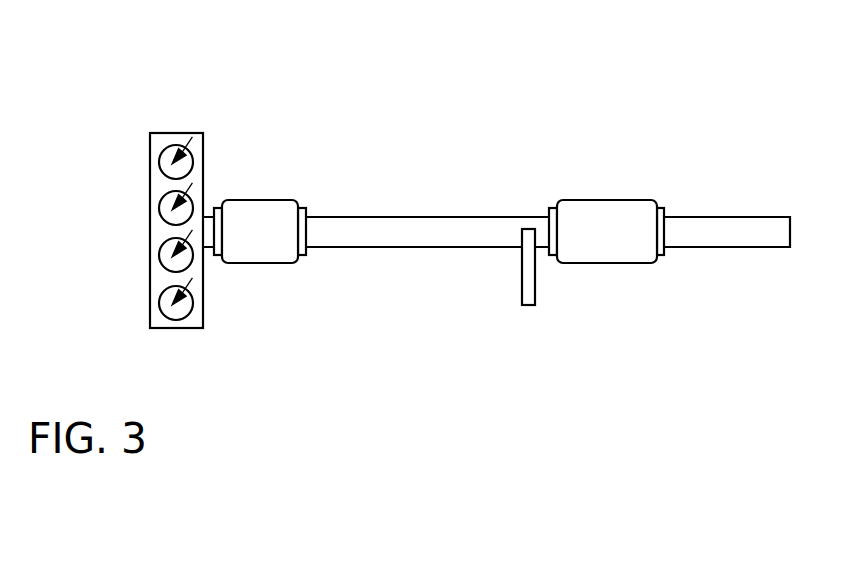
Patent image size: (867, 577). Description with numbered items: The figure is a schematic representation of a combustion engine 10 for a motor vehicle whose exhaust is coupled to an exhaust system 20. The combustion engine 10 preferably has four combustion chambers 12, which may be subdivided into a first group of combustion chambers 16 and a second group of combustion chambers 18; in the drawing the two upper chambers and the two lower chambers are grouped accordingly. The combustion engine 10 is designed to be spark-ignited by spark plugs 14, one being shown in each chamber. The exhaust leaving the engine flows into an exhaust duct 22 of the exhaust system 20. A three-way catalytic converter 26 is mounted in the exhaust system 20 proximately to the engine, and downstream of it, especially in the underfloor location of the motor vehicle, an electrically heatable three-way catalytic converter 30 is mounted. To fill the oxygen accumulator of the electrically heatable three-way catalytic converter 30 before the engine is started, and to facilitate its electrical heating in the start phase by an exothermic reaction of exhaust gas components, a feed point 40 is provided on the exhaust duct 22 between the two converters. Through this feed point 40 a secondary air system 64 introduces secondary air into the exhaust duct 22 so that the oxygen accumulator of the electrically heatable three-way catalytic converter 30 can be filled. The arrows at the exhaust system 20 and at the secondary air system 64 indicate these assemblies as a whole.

The combustion engine 10 is at (178, 88).
The combustion chambers 12 is at (192, 155).
The spark plugs 14 is at (193, 285).
The first group of combustion chambers 16 is at (165, 207).
The second group of combustion chambers 18 is at (165, 303).
The exhaust system 20 is at (482, 163).
The exhaust duct 22 is at (402, 224).
The three-way catalytic converter 26 is at (277, 200).
The electrically heatable three-way catalytic converter 30 is at (628, 210).
The feed point 40 is at (527, 230).
The secondary air system 64 is at (508, 331).